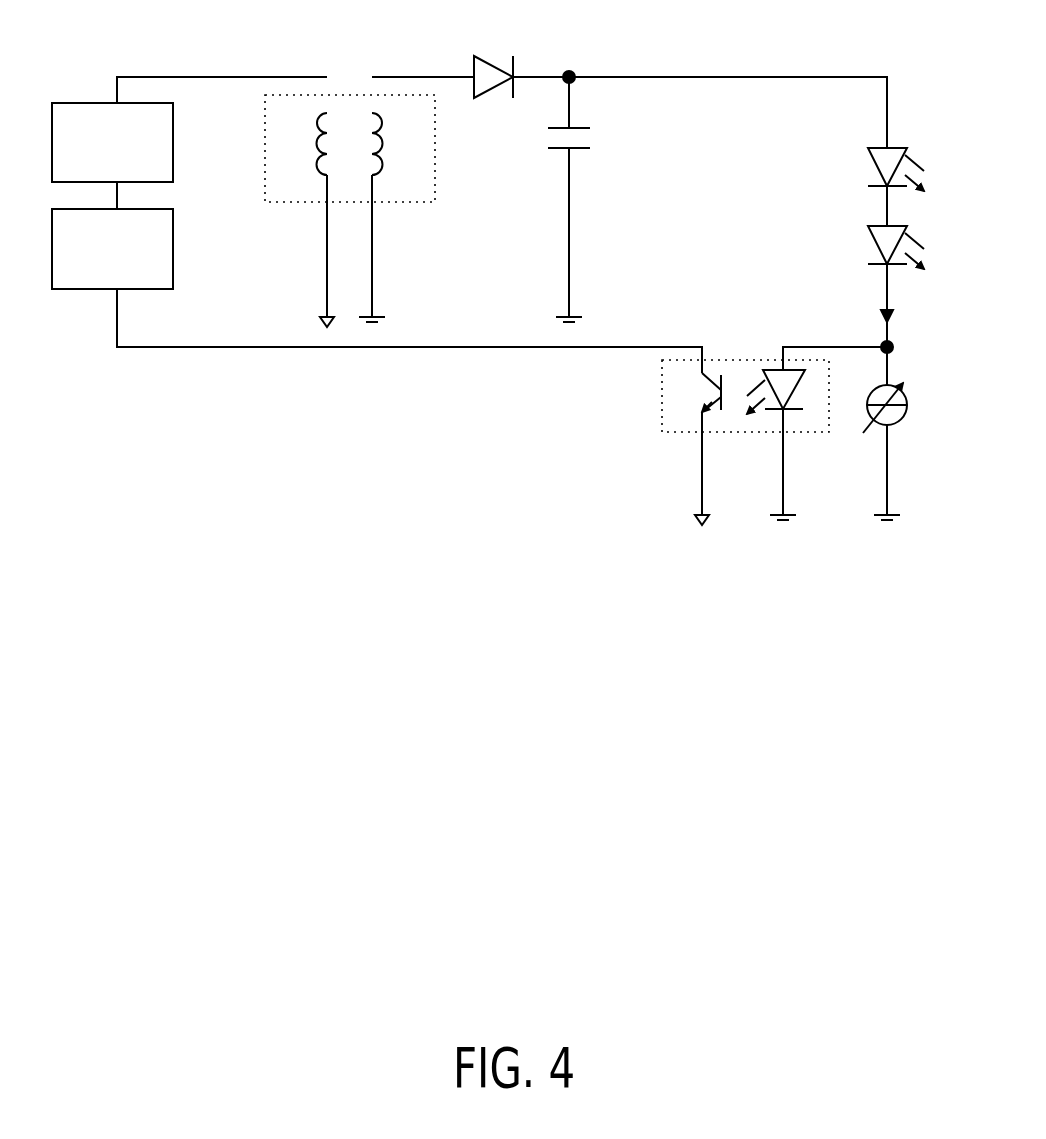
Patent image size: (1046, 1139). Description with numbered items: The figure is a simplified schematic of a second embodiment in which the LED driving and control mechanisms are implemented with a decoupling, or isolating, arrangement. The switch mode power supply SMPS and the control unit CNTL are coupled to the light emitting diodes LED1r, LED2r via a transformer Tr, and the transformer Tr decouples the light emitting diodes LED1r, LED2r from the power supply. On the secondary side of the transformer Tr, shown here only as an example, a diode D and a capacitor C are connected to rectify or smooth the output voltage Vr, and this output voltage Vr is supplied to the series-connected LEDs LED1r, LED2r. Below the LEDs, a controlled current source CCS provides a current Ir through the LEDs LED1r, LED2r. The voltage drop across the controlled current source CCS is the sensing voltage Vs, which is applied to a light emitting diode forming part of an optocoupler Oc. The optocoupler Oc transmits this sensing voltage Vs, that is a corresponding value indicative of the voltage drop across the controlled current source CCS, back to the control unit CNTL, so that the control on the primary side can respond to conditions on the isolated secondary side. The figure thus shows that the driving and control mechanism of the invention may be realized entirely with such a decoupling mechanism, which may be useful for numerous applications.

The switch mode power supply SMPS is at (112, 142).
The control unit CNTL is at (112, 249).
The transformer Tr is at (350, 211).
The diode D is at (493, 94).
The output voltage Vr is at (592, 44).
The capacitor C is at (589, 223).
The light emitting diode LED1r is at (835, 169).
The light emitting diode LED2r is at (833, 245).
The current Ir is at (902, 308).
The sensing voltage Vs is at (844, 327).
The optocoupler Oc is at (723, 442).
The controlled current source CCS is at (910, 451).